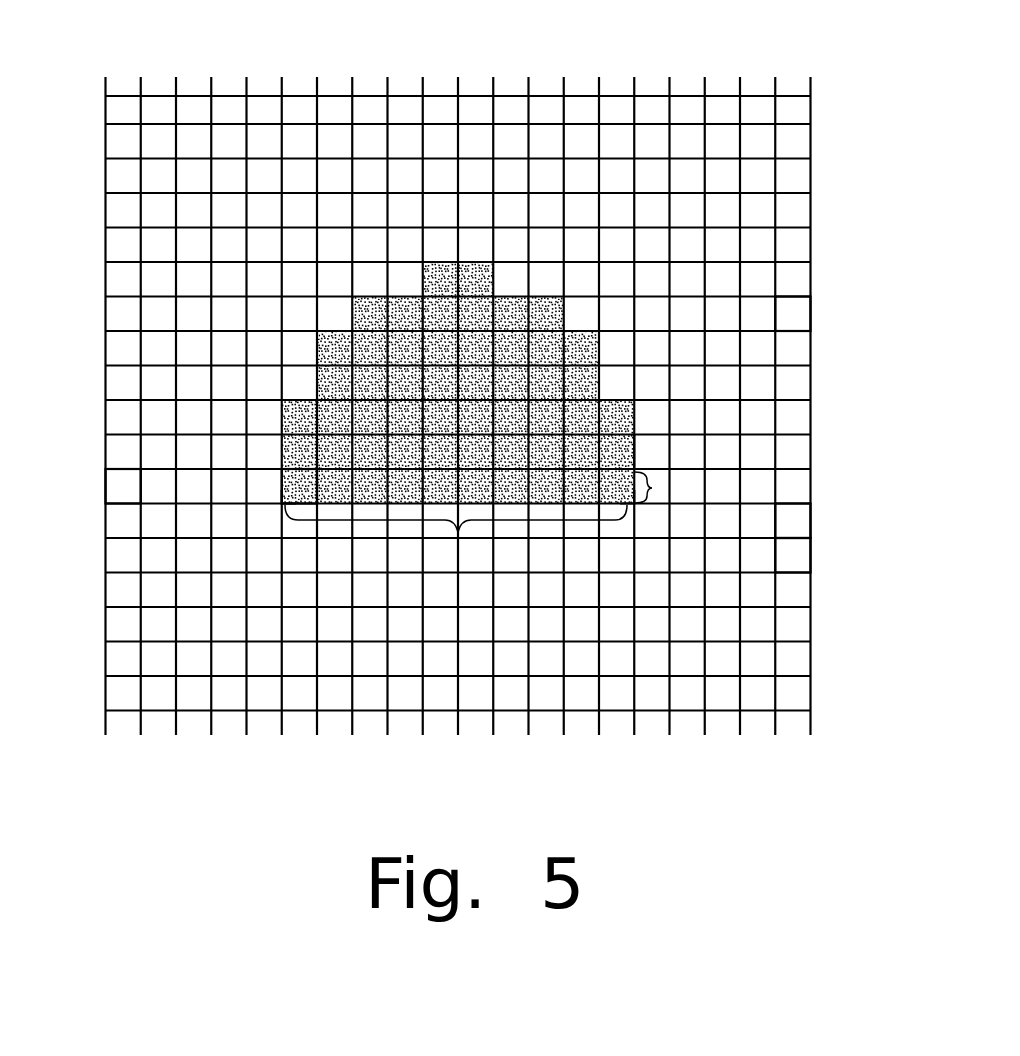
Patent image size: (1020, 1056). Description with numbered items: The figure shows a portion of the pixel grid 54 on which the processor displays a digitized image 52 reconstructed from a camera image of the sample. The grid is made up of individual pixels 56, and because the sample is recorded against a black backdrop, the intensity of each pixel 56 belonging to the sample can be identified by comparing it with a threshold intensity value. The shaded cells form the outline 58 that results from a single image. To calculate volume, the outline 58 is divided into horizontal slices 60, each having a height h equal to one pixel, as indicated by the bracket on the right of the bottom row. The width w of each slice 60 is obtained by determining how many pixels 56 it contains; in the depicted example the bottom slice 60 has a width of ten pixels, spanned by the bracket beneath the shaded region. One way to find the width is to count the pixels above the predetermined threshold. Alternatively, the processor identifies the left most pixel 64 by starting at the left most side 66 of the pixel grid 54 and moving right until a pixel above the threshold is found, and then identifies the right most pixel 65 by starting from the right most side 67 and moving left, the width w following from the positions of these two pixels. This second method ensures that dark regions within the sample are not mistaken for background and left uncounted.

The pixel grid 54 is at (613, 85).
The digitized image 52 is at (573, 248).
The pixel 56 is at (805, 312).
The outline 58 is at (636, 453).
The height h is at (652, 488).
The right most side 67 is at (795, 521).
The right most pixel 65 is at (632, 505).
The left most side 66 is at (115, 492).
The slice 60 is at (278, 487).
The left most pixel 64 is at (282, 504).
The width w is at (458, 532).